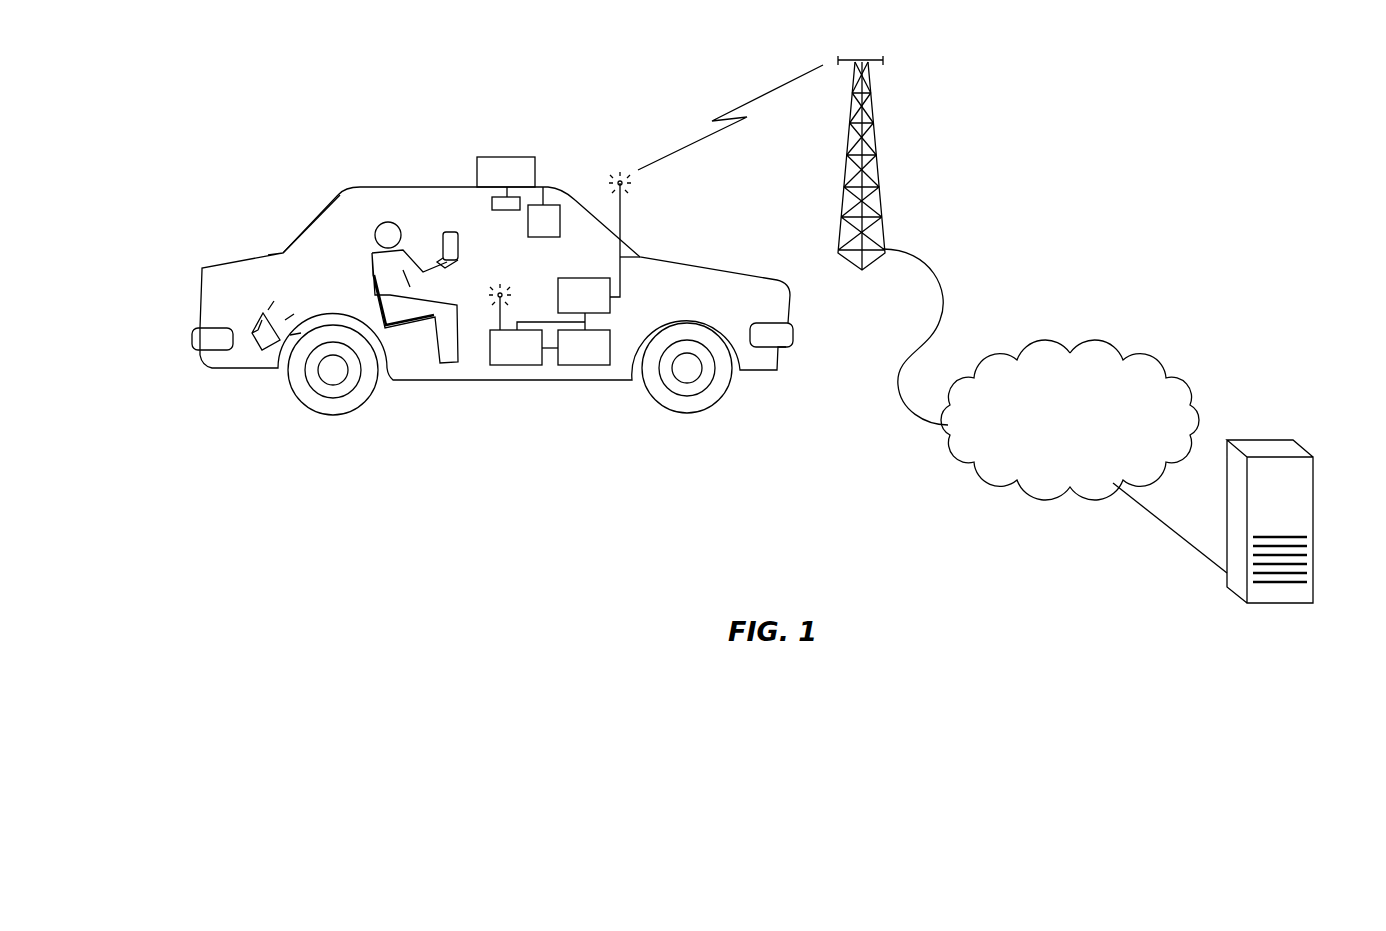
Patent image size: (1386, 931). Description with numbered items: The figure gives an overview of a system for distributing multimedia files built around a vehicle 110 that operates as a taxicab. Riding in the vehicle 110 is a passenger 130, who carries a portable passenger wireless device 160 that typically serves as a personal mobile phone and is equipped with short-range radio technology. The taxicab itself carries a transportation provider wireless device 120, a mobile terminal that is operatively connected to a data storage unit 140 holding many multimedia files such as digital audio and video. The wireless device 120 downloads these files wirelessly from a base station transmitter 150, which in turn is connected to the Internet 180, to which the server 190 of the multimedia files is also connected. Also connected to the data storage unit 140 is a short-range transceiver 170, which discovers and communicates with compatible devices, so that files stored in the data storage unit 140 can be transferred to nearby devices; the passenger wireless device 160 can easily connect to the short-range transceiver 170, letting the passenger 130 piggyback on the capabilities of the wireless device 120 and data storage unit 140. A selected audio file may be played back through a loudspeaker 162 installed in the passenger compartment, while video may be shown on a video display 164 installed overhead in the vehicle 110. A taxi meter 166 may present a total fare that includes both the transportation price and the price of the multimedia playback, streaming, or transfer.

The vehicle 110 is at (377, 187).
The passenger 130 is at (380, 222).
The passenger wireless device 160 is at (461, 230).
The video display 164 is at (490, 203).
The taxi meter 166 is at (545, 205).
The wireless device 120 is at (602, 307).
The data storage unit 140 is at (602, 359).
The short-range transceiver 170 is at (534, 359).
The loudspeaker 162 is at (270, 352).
The base station transmitter 150 is at (871, 102).
The Internet 180 is at (1091, 446).
The server 190 is at (1263, 440).